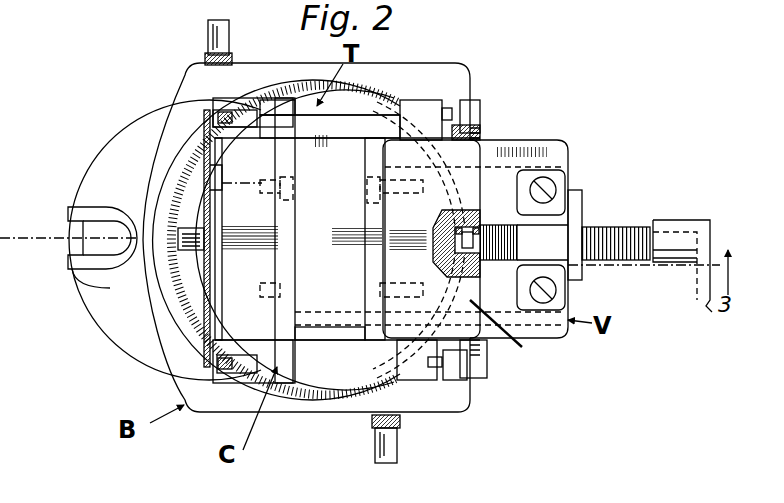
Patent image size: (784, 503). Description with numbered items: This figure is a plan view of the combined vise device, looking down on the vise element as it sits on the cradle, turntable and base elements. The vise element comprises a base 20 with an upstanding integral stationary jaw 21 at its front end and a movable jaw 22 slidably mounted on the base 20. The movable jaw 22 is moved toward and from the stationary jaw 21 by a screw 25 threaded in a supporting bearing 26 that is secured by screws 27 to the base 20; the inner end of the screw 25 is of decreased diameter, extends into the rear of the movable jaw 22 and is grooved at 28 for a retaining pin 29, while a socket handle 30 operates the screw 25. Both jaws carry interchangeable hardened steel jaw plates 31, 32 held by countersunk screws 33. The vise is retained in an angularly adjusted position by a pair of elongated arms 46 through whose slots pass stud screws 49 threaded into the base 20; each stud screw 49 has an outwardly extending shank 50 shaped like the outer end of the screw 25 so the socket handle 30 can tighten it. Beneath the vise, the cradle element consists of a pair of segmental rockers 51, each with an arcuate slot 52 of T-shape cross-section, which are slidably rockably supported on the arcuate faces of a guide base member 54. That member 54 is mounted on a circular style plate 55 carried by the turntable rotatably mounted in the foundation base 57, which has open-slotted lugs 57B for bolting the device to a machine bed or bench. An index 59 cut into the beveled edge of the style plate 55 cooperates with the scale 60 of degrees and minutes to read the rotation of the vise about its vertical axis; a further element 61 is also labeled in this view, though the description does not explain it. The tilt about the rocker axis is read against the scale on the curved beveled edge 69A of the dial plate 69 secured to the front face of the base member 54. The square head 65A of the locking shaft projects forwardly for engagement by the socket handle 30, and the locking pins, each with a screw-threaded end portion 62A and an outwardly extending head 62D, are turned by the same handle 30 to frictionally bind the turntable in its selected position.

The base 20 is at (553, 147).
The stationary jaw 21 is at (237, 172).
The movable jaw 22 is at (503, 333).
The screw 25 is at (612, 226).
The supporting bearing 26 is at (565, 208).
The screws 27 is at (560, 185).
The groove 28 is at (460, 253).
The retaining pin 29 is at (447, 220).
The socket handle 30 is at (705, 276).
The jaw plate 31 is at (290, 233).
The jaw plate 32 is at (368, 256).
The countersunk screws 33 is at (292, 192).
The elongated arms 46 is at (482, 136).
The stud screws 49 is at (478, 125).
The shank 50 is at (470, 103).
The rockers 51 is at (217, 100).
The arcuate slot 52 is at (220, 117).
The guide base member 54 is at (343, 123).
The style plate 55 is at (190, 302).
The foundation base 57 is at (190, 83).
The open-slotted lugs 57B is at (80, 208).
The index 59 is at (320, 376).
The scale 60 is at (320, 393).
The inner ring 61 is at (207, 327).
The end portion 62A is at (205, 57).
The head 62D is at (213, 33).
The square head 65A is at (187, 247).
The dial plate 69 is at (207, 262).
The curved beveled edge 69A is at (205, 175).